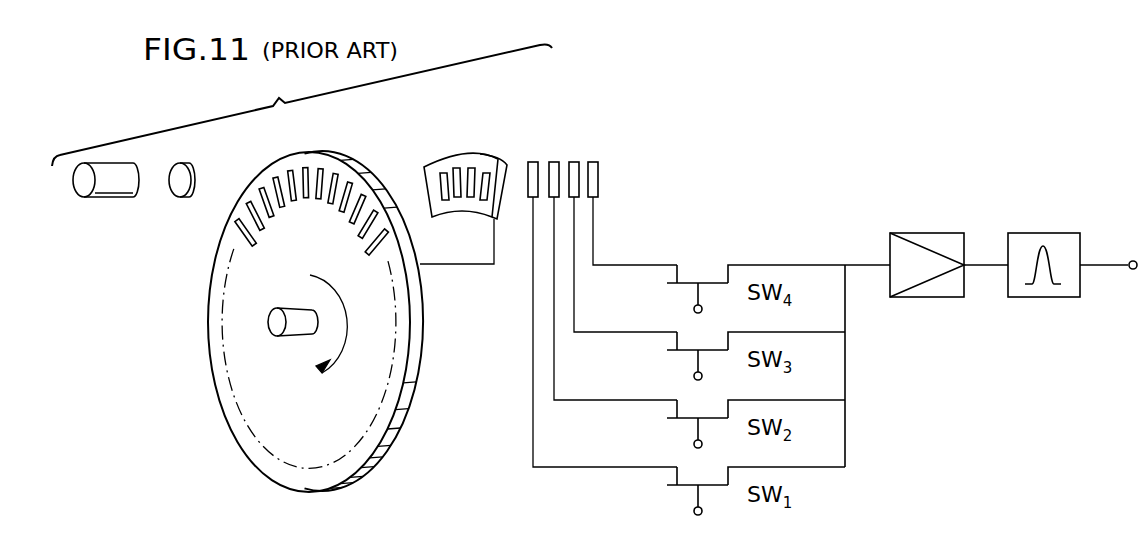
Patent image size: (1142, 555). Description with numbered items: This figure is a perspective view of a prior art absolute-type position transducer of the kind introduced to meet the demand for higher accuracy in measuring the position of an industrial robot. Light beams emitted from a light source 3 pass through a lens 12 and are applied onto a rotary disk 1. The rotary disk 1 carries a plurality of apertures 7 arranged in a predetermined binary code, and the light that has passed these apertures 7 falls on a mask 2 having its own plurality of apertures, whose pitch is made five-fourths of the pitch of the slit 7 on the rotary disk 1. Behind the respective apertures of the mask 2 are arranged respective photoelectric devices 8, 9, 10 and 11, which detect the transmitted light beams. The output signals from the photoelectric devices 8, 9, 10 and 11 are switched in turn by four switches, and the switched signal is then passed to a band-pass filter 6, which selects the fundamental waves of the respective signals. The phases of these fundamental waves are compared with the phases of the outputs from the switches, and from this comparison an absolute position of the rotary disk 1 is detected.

The rotary disk 1 is at (263, 372).
The mask 2 is at (437, 156).
The light source 3 is at (107, 205).
The band-pass filter 6 is at (1042, 233).
The apertures 7 is at (242, 427).
The photoelectric device 8 is at (533, 161).
The photoelectric device 9 is at (554, 161).
The photoelectric device 10 is at (574, 161).
The photoelectric device 11 is at (594, 161).
The lens 12 is at (178, 205).